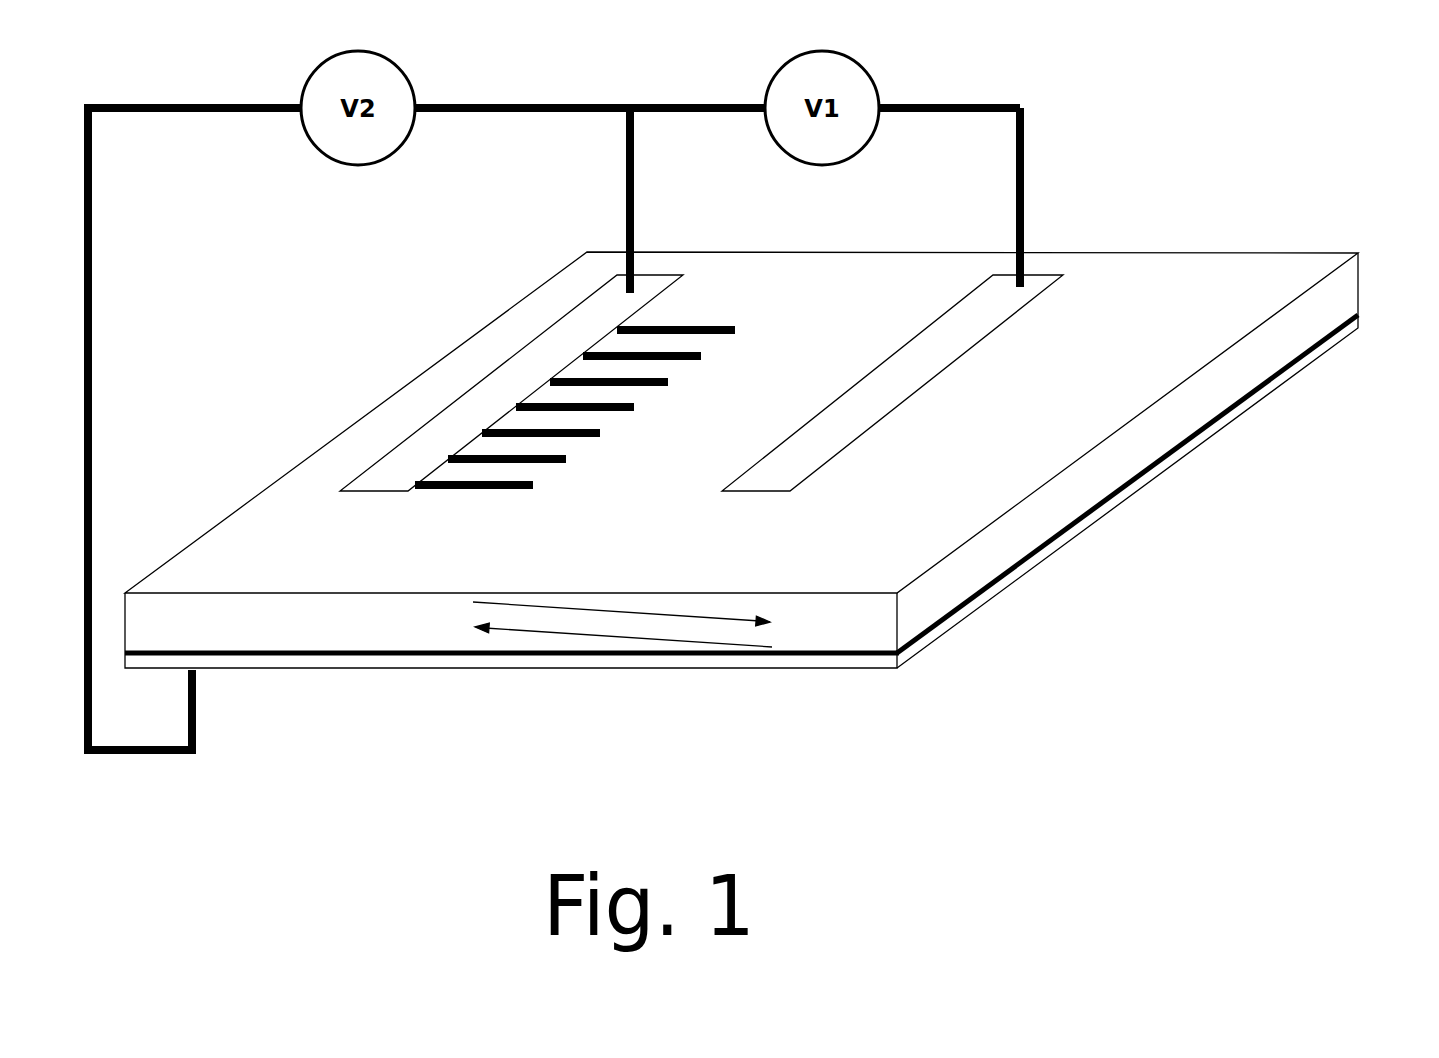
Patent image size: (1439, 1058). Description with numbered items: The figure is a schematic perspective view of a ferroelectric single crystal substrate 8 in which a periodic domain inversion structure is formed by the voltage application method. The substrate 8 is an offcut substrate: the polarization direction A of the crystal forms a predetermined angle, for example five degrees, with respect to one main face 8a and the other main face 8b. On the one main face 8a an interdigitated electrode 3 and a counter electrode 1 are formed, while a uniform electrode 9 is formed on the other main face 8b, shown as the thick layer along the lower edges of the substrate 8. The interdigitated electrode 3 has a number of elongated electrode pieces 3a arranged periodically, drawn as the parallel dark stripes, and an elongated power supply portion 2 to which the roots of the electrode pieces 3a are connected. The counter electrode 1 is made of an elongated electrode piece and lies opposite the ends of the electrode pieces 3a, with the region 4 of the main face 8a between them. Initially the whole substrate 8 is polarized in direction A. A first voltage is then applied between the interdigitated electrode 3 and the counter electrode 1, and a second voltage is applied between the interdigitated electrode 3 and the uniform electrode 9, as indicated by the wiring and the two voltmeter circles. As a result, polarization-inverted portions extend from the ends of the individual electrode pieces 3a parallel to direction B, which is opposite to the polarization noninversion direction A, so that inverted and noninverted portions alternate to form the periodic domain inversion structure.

The counter electrode 1 is at (923, 368).
The power supply portion 2 is at (560, 340).
The interdigitated electrode 3 is at (523, 500).
The electrode pieces 3a is at (733, 312).
The surface region between electrodes 4 is at (750, 424).
The ferroelectric single crystal substrate 8 is at (1326, 298).
The one main face 8a is at (1263, 280).
The other main face 8b is at (1277, 381).
The uniform electrode 9 is at (1043, 566).
The polarization direction A is at (627, 636).
The polarization inversion direction B is at (717, 620).